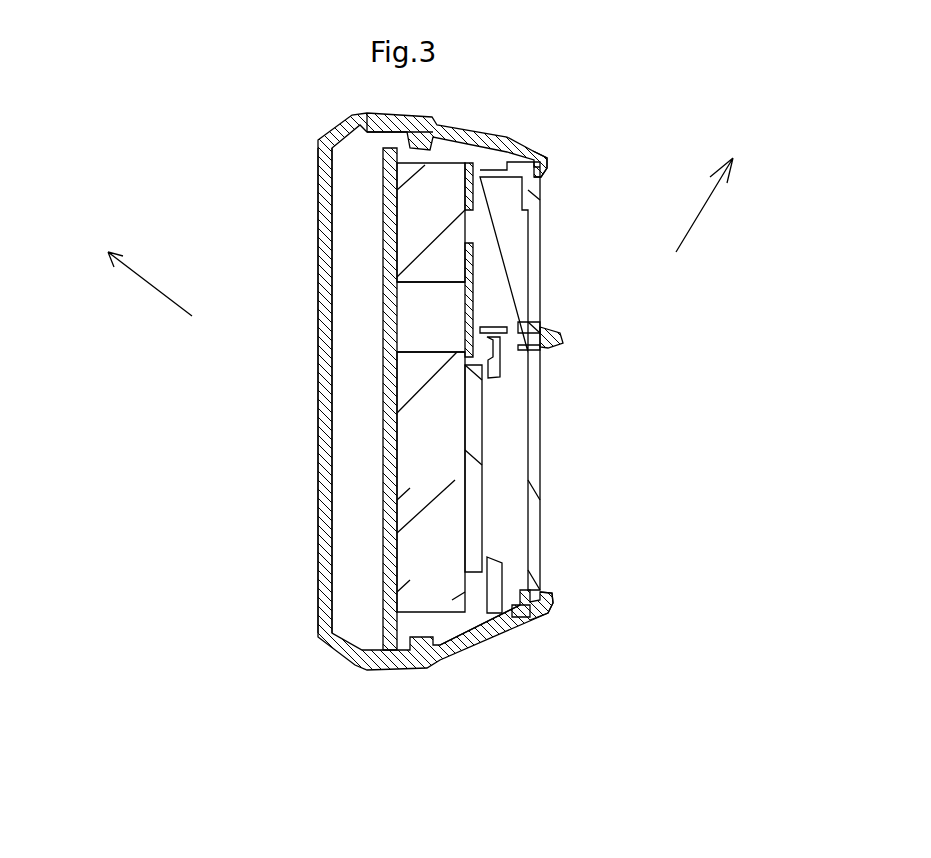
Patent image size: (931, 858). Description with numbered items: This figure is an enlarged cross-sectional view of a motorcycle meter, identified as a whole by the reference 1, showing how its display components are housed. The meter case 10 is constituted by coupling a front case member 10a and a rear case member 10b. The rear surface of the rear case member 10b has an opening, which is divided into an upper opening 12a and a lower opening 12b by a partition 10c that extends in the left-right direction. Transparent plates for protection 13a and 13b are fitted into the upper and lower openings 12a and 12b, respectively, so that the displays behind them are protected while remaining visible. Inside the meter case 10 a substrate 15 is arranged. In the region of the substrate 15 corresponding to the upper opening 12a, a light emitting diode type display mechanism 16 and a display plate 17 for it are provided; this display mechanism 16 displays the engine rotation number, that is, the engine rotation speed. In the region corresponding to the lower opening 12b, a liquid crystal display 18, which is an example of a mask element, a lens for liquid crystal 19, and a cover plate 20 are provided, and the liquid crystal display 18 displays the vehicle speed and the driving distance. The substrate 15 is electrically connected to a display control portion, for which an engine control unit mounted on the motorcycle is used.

The display device 1 is at (503, 124).
The meter case 10 is at (284, 382).
The front case member 10a is at (318, 245).
The rear case member 10b is at (477, 637).
The partition 10c is at (555, 350).
The upper opening 12a is at (545, 160).
The lower opening 12b is at (520, 633).
The transparent plate for protection 13a is at (540, 248).
The transparent plate for protection 13b is at (535, 512).
The substrate 15 is at (395, 450).
The light emitting diode type display mechanism 16 is at (425, 232).
The display plate 17 is at (473, 300).
The liquid crystal display 18 is at (425, 532).
The lens for liquid crystal 19 is at (470, 465).
The cover plate 20 is at (497, 588).